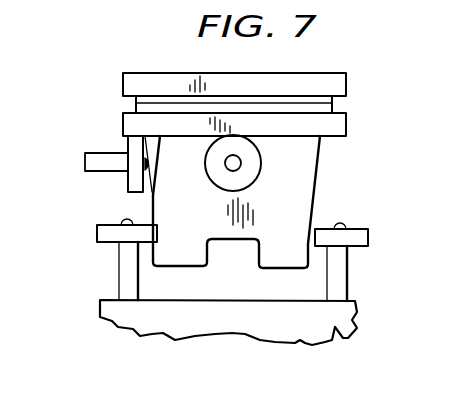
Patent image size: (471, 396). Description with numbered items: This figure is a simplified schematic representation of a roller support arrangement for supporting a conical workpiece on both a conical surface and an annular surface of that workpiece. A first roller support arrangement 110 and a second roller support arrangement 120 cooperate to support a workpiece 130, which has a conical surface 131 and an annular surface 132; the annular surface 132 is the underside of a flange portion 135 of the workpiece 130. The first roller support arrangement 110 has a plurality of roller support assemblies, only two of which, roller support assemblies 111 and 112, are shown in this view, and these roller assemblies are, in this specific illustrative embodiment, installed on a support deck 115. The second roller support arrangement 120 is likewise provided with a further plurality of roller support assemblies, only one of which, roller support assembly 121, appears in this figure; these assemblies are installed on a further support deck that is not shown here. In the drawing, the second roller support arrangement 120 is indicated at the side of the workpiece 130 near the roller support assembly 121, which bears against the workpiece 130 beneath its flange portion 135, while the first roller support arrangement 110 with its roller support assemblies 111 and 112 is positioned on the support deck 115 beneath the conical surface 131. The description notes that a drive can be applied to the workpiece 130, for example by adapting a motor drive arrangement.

The workpiece 130 is at (333, 80).
The flange portion 135 is at (340, 122).
The annular surface 132 is at (338, 138).
The conical surface 131 is at (300, 202).
The second roller support arrangement 120 is at (70, 155).
The roller support assembly 121 is at (128, 183).
The first roller support arrangement 110 is at (228, 262).
The roller support assembly 111 is at (125, 271).
The roller support assembly 112 is at (333, 290).
The support deck 115 is at (343, 338).